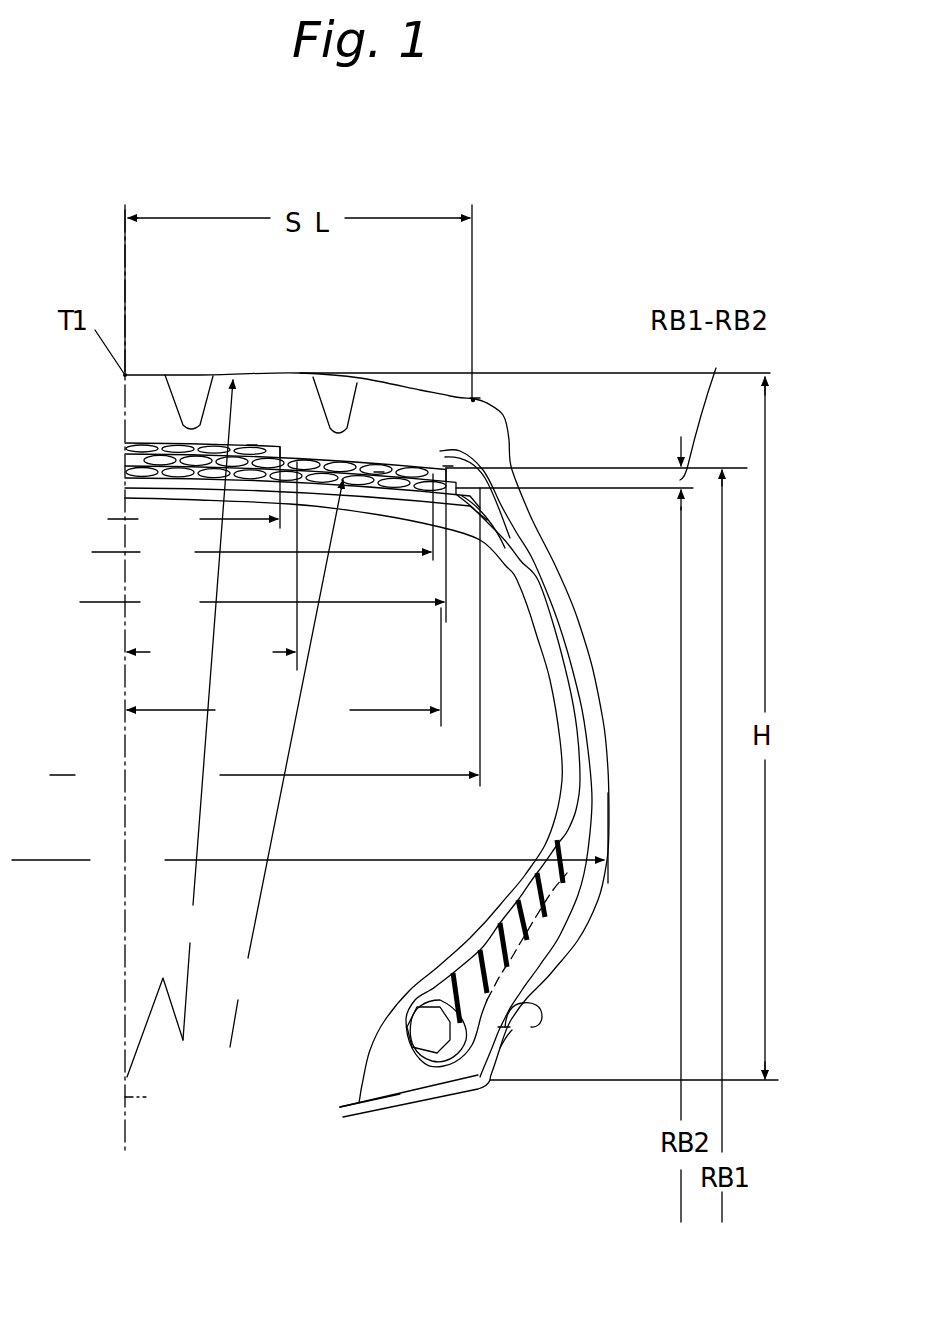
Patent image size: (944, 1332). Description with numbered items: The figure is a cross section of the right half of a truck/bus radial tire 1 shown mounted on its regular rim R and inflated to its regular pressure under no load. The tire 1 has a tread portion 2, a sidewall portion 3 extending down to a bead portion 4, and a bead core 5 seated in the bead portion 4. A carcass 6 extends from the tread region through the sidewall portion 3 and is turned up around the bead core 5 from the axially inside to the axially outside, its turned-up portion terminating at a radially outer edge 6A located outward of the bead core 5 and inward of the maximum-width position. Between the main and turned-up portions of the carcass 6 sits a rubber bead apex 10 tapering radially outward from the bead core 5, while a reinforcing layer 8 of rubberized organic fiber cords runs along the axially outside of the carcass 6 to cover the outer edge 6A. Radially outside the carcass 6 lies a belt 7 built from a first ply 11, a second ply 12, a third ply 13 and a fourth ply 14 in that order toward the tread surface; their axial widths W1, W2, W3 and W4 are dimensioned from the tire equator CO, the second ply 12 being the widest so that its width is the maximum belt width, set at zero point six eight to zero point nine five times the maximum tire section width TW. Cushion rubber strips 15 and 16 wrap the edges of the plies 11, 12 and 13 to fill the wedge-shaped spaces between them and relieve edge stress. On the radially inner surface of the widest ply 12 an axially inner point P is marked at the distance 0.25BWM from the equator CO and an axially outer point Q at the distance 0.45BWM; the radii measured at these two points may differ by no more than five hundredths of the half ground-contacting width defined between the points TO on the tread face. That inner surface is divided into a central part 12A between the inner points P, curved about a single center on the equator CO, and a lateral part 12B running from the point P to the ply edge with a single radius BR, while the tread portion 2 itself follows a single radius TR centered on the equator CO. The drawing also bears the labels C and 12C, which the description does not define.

The truck/bus radial tire 1 is at (520, 354).
The tread portion 2 is at (189, 358).
The sidewall portion 3 is at (622, 750).
The bead portion 4 is at (540, 992).
The bead core 5 is at (420, 1042).
The carcass 6 is at (552, 838).
The radially outer edge of carcass turned up portion 6A is at (533, 941).
The belt 7 is at (53, 422).
The reinforcing layer 8 is at (500, 1014).
The rubber bead apex 10 is at (468, 970).
The first belt ply 11 is at (125, 488).
The second belt ply 12 is at (125, 470).
The central part of widest belt ply inner surface 12A is at (252, 450).
The lateral part of widest belt ply inner surface 12B is at (379, 556).
The belt ply edge 12C is at (447, 466).
The third belt ply 13 is at (125, 456).
The fourth belt ply 14 is at (125, 445).
The cushion rubber strip 15 is at (504, 546).
The cushion rubber strip 16 is at (488, 500).
The axially inner point P is at (302, 460).
The axially outer point Q is at (443, 475).
The tread edge point C is at (472, 400).
The tread face point TO is at (475, 398).
The axial width of first belt ply W1 is at (262, 521).
The axial width of second belt ply W2 is at (265, 640).
The axial width of third belt ply W3 is at (263, 545).
The axial width of fourth belt ply W4 is at (194, 491).
The distance of 0.25 times maximum belt width 0.25BWM is at (211, 655).
The distance of 0.45 times maximum belt width 0.45BWM is at (283, 714).
The maximum tire section width TW is at (310, 838).
The tread radius of curvature TR is at (180, 728).
The lateral part radius of curvature BR is at (284, 763).
The tire equator CO is at (143, 1097).
The regular rim R is at (390, 1108).